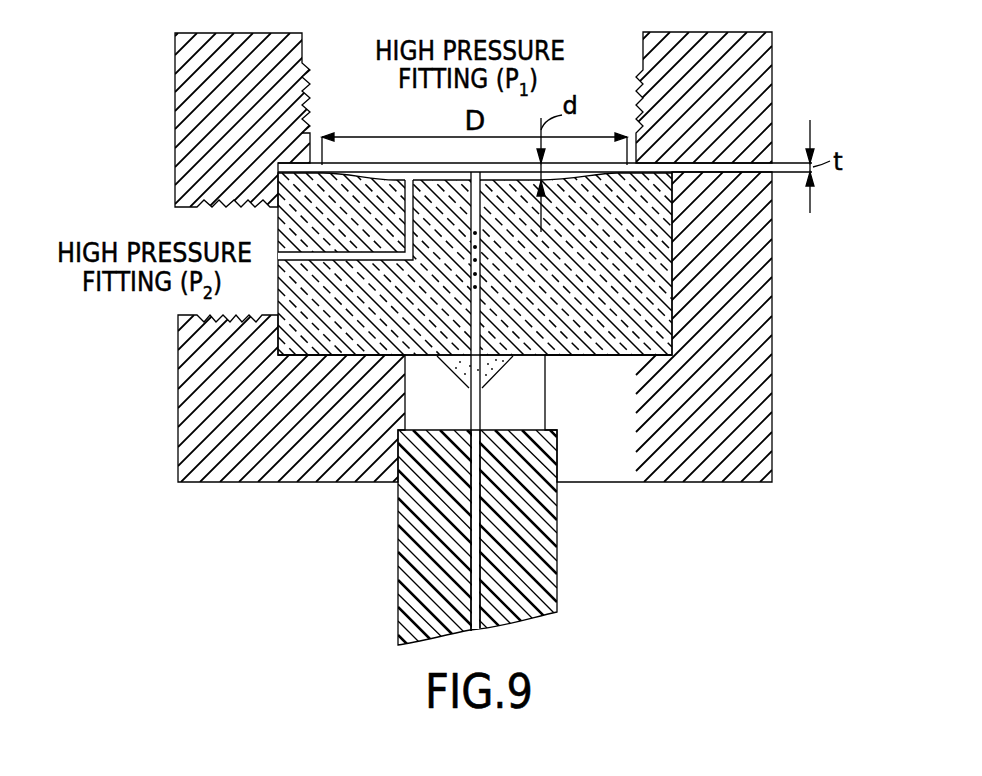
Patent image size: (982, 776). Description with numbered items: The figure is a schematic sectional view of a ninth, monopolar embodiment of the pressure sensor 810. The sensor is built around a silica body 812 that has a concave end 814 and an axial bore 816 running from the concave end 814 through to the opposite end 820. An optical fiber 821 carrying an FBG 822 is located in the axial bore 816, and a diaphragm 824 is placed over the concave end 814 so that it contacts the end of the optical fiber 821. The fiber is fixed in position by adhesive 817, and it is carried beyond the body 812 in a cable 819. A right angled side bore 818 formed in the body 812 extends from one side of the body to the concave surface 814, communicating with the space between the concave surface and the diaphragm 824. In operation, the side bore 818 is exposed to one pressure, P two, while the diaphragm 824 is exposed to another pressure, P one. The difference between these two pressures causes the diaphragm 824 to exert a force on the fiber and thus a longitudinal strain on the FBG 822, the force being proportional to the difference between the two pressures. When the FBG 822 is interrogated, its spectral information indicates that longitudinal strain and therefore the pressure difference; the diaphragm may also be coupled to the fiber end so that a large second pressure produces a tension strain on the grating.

The pressure sensor 810 is at (218, 525).
The silica body 812 is at (672, 292).
The concave end 814 is at (568, 182).
The axial bore 816 is at (481, 327).
The adhesive 817 is at (434, 363).
The right angled side bore 818 is at (278, 246).
The cable 819 is at (547, 568).
The opposite end 820 is at (531, 358).
The optical fiber 821 is at (470, 400).
The FBG 822 is at (481, 250).
The diaphragm 824 is at (674, 164).